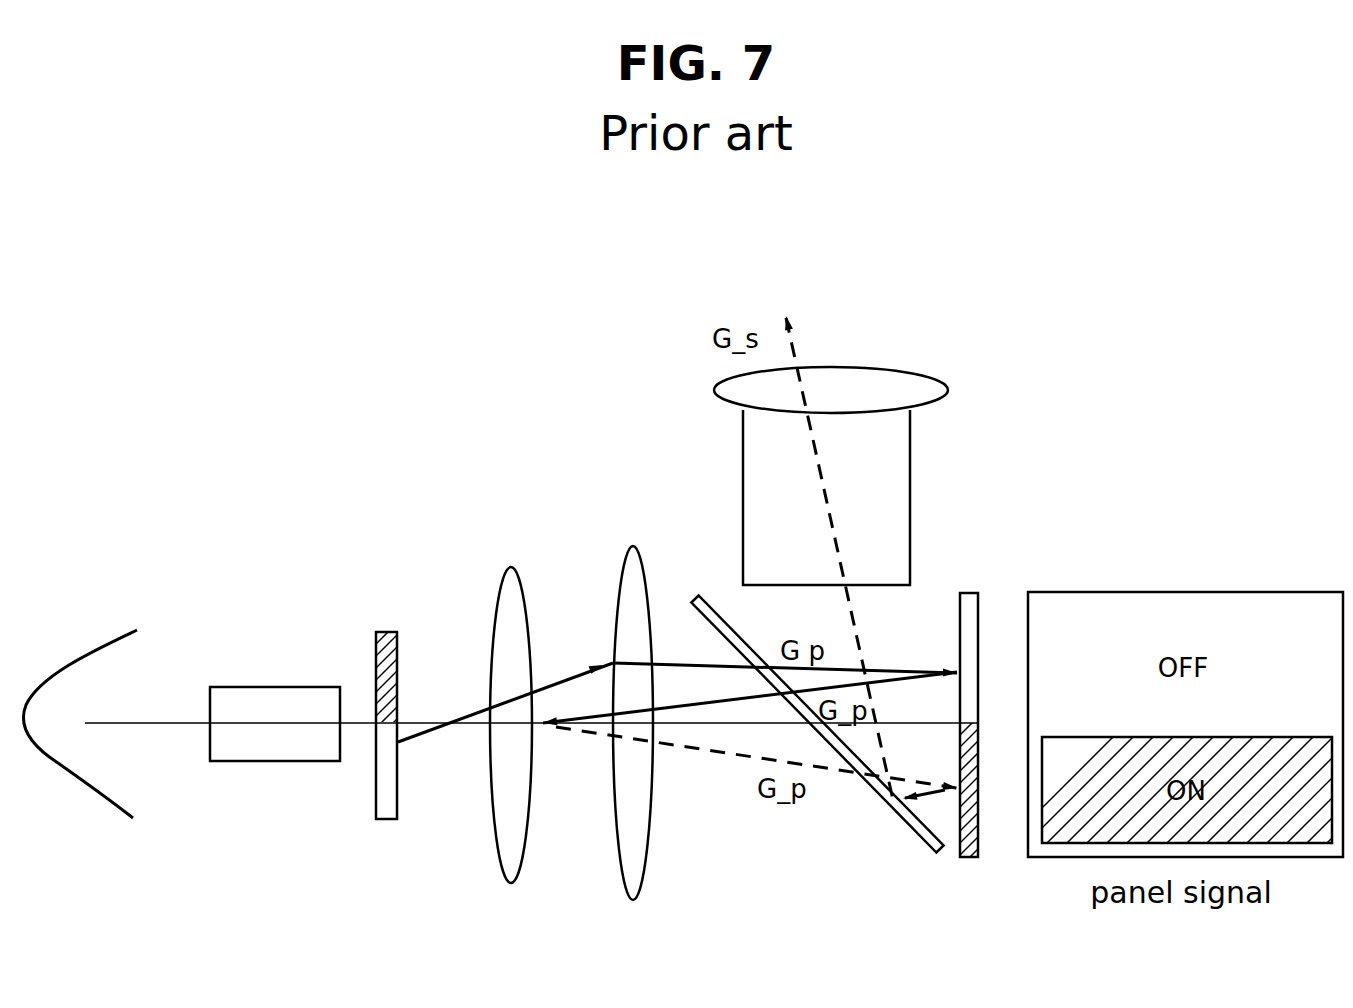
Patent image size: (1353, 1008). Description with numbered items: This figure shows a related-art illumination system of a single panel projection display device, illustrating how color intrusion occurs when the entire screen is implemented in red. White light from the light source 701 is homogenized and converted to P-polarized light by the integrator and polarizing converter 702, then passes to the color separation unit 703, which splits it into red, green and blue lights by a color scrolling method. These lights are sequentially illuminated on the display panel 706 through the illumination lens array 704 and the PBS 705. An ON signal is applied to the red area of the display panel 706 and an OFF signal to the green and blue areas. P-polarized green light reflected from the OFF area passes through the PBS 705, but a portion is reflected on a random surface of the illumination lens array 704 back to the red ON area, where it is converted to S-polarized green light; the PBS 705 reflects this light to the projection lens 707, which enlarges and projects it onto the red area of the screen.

The light source 701 is at (88, 656).
The integrator and polarizing converter 702 is at (273, 688).
The color separation unit 703 is at (386, 820).
The illumination lens array 704 is at (508, 580).
The PBS 705 is at (893, 817).
The display panel 706 is at (967, 593).
The projection lens 707 is at (948, 389).